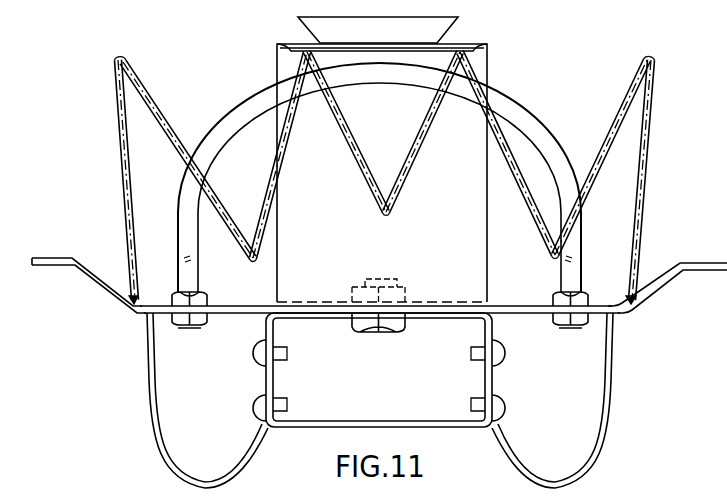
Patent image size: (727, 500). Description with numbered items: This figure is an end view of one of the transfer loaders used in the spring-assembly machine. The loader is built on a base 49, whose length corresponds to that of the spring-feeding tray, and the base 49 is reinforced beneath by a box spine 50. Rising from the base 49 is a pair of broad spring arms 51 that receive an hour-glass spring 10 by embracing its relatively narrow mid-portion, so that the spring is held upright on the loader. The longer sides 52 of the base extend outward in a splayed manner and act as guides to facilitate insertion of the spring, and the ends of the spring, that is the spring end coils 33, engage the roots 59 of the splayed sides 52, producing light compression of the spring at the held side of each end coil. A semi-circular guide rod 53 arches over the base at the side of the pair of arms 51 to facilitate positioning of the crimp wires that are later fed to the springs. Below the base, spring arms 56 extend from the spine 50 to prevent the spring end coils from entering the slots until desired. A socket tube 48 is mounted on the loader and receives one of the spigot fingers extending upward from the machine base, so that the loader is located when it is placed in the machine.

The hour-glass spring 10 is at (130, 75).
The spring end coil 33 is at (652, 107).
The socket tube 48 is at (322, 28).
The base 49 is at (453, 314).
The box spine 50 is at (328, 423).
The broad spring arm 51 is at (481, 64).
The splayed side 52 is at (97, 280).
The semi-circular guide rod 53 is at (232, 155).
The spring arm 56 is at (153, 413).
The root 59 is at (131, 293).